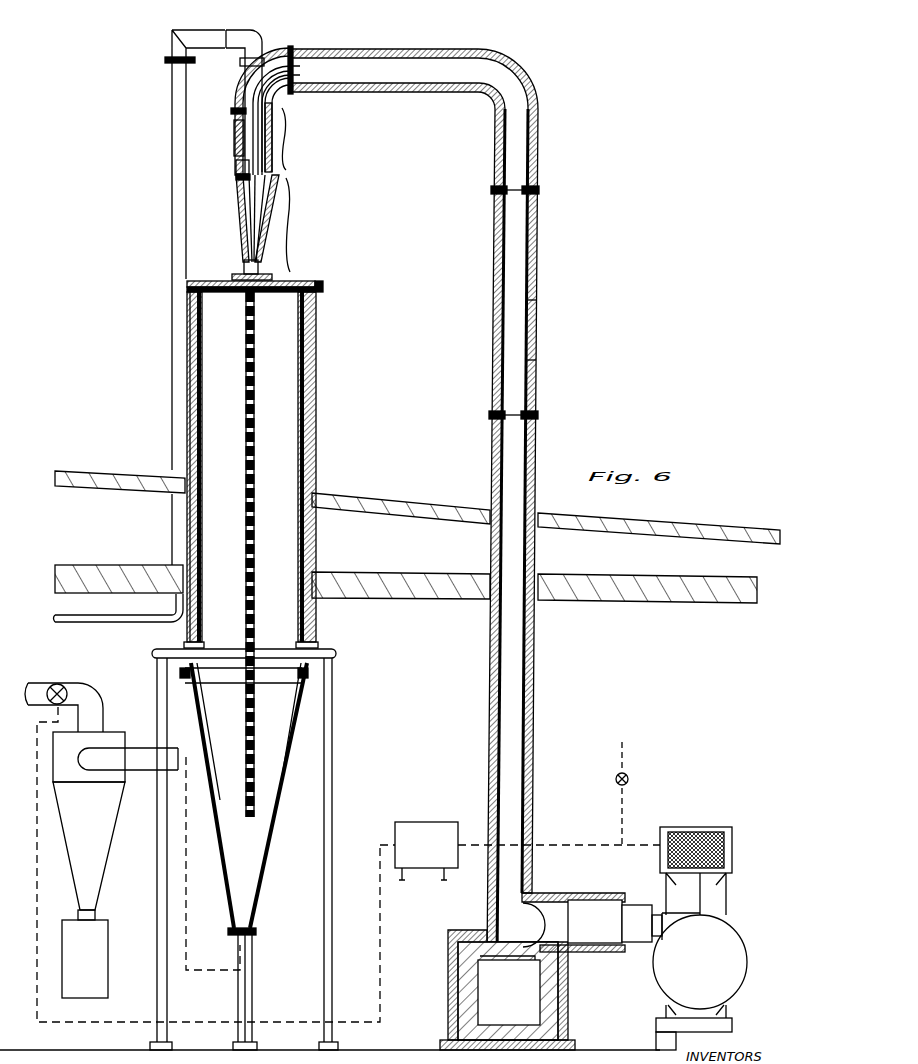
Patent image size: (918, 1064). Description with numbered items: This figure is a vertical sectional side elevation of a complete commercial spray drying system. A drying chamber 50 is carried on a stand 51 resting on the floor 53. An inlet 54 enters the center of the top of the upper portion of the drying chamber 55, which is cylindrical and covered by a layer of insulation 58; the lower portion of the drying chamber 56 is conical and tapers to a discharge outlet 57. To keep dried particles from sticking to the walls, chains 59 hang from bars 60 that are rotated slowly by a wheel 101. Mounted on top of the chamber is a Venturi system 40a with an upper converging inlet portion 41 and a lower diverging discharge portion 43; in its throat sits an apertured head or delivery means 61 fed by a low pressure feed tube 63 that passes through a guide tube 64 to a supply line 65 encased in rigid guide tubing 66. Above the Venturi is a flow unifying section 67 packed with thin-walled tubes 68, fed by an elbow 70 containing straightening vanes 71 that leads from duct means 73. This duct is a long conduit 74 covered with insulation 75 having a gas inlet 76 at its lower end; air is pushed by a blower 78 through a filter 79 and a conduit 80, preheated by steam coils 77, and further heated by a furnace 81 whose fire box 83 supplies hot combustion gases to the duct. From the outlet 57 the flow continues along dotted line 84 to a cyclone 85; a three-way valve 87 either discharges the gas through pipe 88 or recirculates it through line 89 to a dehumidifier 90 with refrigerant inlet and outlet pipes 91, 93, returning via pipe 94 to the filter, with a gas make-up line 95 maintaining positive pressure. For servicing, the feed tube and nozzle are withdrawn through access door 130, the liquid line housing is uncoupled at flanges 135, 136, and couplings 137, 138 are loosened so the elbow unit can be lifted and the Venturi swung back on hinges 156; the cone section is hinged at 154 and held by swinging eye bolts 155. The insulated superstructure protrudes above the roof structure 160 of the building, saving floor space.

The Venturi system 40a is at (279, 223).
The upper converging inlet portion 41 is at (244, 196).
The lower diverging discharge portion 43 is at (244, 266).
The chamber 50 is at (318, 540).
The stand 51 is at (334, 722).
The floor 53 is at (385, 1049).
The inlet 54 is at (255, 293).
The upper portion of the drying chamber 55 is at (284, 395).
The lower portion of the drying chamber 56 is at (270, 835).
The discharge outlet 57 is at (248, 940).
The layer of insulation 58 is at (316, 398).
The chains 59 is at (202, 448).
The bars 60 is at (226, 293).
The apertured head or delivery means 61 is at (248, 230).
The low pressure feed tube 63 is at (262, 208).
The guide tube 64 is at (233, 112).
The supply line 65 is at (248, 28).
The rigid guide tubing 66 is at (172, 141).
The flow unifying section 67 is at (297, 139).
The thin-walled tubes 68 is at (236, 140).
The elbow 70 is at (296, 44).
The straightening vanes 71 is at (296, 70).
The duct means 73 is at (545, 214).
The conduit 74 is at (528, 305).
The insulation 75 is at (538, 358).
The gas inlet 76 is at (638, 910).
The steam coils 77 is at (604, 938).
The blower 78 is at (727, 945).
The filter 79 is at (718, 826).
The conduit 80 is at (702, 894).
The furnace 81 is at (575, 1020).
The fire box 83 is at (517, 1011).
The dotted line 84 is at (188, 905).
The cyclone 85 is at (108, 826).
The valve 87 is at (64, 686).
The pipe 88 is at (38, 688).
The line 89 is at (37, 912).
The dehumidifier 90 is at (424, 822).
The refrigerant inlet pipe 91 is at (402, 880).
The refrigerant outlet pipe 93 is at (444, 880).
The pipe 94 is at (574, 845).
The gas make-up line 95 is at (628, 804).
The wheel 101 is at (232, 276).
The access door 130 is at (236, 165).
The flange 135 is at (166, 61).
The flange 136 is at (240, 62).
The coupling 137 is at (300, 50).
The coupling 138 is at (236, 177).
The hinge 154 is at (308, 676).
The swinging eye bolts 155 is at (180, 678).
The hinges 156 is at (322, 283).
The roof structure 160 is at (403, 500).